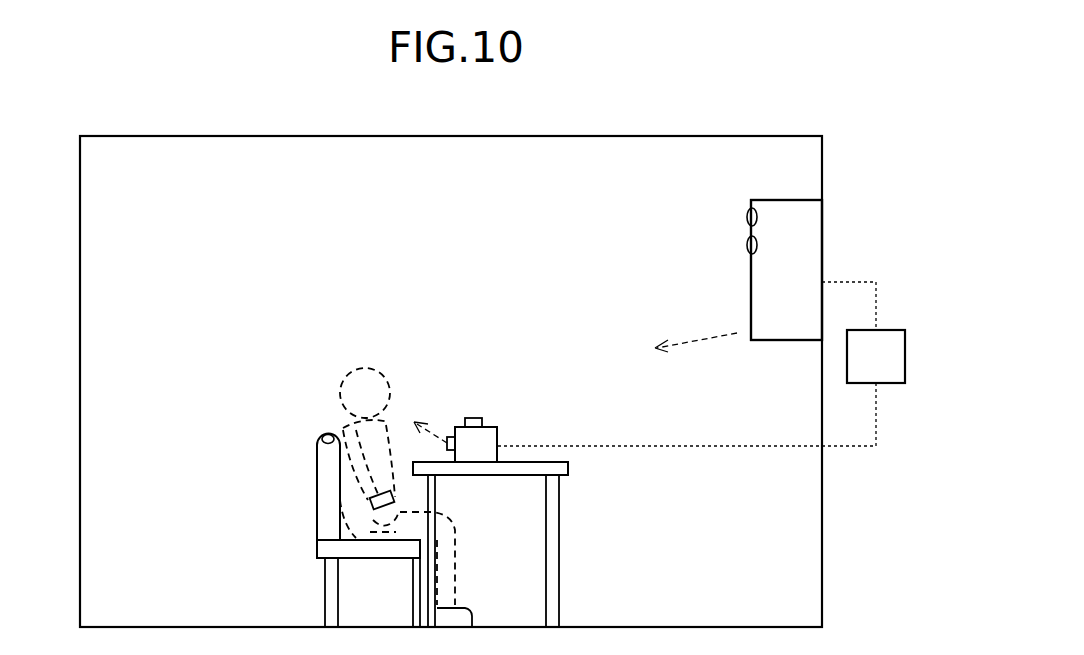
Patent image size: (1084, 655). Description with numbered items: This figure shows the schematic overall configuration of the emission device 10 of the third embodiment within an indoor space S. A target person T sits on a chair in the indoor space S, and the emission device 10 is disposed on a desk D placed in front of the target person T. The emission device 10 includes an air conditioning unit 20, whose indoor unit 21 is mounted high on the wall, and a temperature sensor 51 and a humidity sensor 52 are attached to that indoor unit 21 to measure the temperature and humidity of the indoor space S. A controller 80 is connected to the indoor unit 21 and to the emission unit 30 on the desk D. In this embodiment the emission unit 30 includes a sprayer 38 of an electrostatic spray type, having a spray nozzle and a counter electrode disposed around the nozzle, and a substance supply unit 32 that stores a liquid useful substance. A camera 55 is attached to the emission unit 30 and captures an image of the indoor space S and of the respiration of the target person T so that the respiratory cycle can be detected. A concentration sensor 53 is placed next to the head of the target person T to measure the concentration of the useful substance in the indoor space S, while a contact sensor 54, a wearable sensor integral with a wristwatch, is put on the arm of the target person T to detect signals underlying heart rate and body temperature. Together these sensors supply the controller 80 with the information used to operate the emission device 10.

The emission device 10 is at (846, 212).
The air conditioning unit 20 is at (778, 200).
The indoor unit 21 is at (786, 270).
The emission unit 30 is at (508, 429).
The substance supply unit 32 is at (470, 418).
The sprayer 38 is at (478, 450).
The temperature sensor 51 is at (747, 212).
The humidity sensor 52 is at (747, 244).
The concentration sensor 53 is at (320, 440).
The contact sensor 54 is at (376, 498).
The camera 55 is at (452, 432).
The controller 80 is at (900, 330).
The indoor space S is at (200, 303).
The target person T is at (365, 368).
The desk D is at (568, 468).